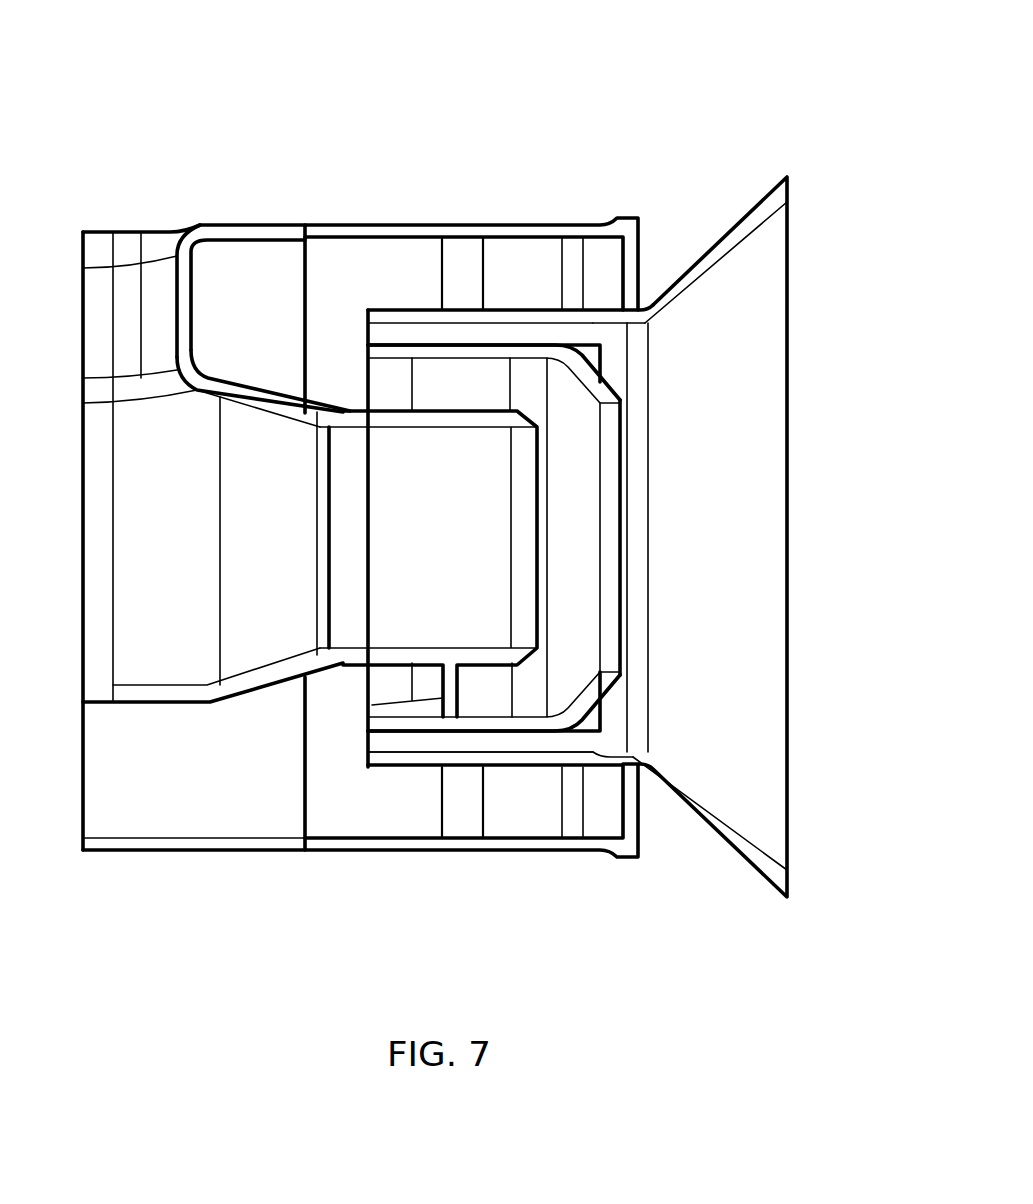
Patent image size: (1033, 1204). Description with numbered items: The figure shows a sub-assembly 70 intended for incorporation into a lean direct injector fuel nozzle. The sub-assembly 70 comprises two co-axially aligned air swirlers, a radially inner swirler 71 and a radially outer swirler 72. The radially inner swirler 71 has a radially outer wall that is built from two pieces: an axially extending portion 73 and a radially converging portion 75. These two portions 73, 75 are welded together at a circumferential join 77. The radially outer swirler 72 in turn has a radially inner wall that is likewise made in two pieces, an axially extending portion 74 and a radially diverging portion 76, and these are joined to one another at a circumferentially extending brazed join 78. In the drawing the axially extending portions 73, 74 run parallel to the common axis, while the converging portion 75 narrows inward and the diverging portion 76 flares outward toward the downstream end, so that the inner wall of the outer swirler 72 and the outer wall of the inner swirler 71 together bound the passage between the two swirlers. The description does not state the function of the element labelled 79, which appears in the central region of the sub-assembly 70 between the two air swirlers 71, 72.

The sub-assembly 70 is at (681, 118).
The radially inner swirler 71 is at (388, 381).
The radially outer swirler 72 is at (398, 268).
The axially extending portion 73 is at (452, 336).
The axially extending portion 74 is at (530, 752).
The radially converging portion 75 is at (605, 687).
The radially diverging portion 76 is at (738, 848).
The circumferential join 77 is at (588, 353).
The brazed join 78 is at (642, 320).
The central block 79 is at (380, 560).